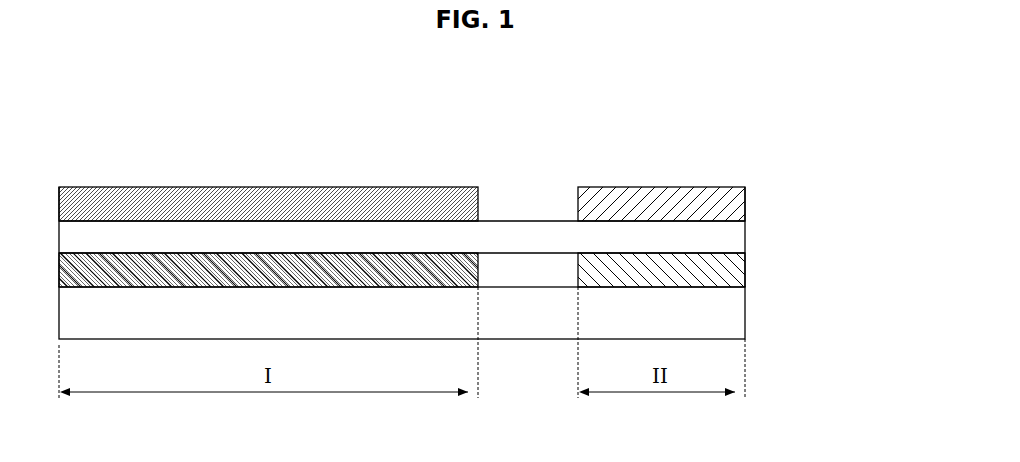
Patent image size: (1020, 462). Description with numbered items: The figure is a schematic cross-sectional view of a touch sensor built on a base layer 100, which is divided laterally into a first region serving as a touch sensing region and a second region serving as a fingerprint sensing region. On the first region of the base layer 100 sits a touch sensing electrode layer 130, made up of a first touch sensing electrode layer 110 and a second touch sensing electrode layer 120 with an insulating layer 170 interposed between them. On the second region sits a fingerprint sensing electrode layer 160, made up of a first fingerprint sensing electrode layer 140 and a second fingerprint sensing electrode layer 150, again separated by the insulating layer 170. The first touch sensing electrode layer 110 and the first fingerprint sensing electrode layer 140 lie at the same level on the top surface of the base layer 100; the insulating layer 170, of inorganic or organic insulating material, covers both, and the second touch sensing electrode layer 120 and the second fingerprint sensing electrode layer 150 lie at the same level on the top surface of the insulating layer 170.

The base layer 100 is at (742, 316).
The first touch sensing electrode layer 110 is at (182, 118).
The second touch sensing electrode layer 120 is at (203, 202).
The touch sensing electrode layer 130 is at (268, 181).
The first fingerprint sensing electrode layer 140 is at (703, 270).
The second fingerprint sensing electrode layer 150 is at (744, 201).
The fingerprint sensing electrode layer 160 is at (734, 237).
The insulating layer 170 is at (525, 237).